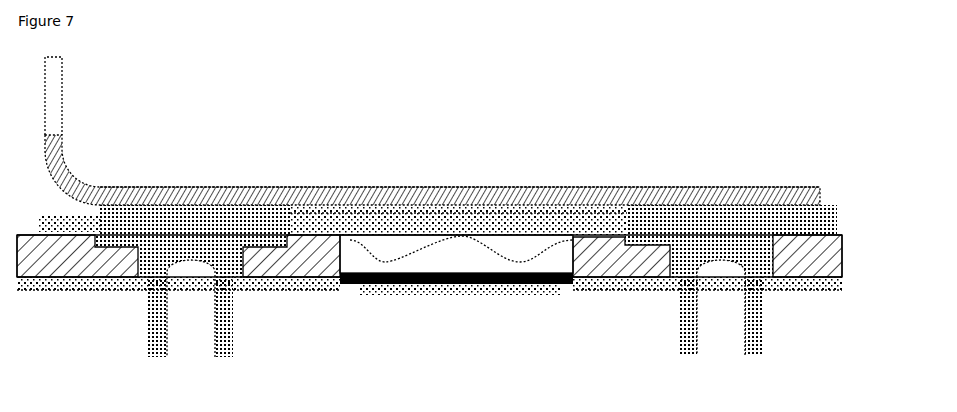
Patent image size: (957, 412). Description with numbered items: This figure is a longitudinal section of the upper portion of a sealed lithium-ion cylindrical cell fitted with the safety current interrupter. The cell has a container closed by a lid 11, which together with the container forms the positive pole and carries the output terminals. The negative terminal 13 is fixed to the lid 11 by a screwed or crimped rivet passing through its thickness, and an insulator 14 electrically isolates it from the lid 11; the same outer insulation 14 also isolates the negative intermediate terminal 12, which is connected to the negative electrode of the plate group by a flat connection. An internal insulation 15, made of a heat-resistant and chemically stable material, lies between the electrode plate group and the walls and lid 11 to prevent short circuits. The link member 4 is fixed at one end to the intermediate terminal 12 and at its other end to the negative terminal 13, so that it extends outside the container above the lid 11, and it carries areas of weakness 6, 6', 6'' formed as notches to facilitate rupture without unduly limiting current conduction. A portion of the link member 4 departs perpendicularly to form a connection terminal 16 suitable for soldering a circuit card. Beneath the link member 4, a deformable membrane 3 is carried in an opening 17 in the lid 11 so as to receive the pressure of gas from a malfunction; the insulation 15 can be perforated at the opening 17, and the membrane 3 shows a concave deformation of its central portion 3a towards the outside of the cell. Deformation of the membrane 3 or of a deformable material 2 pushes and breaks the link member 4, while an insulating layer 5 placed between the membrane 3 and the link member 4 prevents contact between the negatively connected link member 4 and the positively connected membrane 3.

The deformable material 2 is at (442, 285).
The deformable membrane 3 is at (512, 258).
The central portion 3a is at (472, 247).
The link member 4 is at (395, 187).
The insulating layer 5 is at (490, 236).
The area of weakness 6 is at (200, 149).
The area of weakness 6' is at (324, 149).
The area of weakness 6'' is at (590, 158).
The lid 11 is at (797, 263).
The intermediate terminal 12 is at (677, 338).
The negative terminal 13 is at (150, 333).
The insulator 14 is at (55, 217).
The internal insulation 15 is at (88, 288).
The connection terminal 16 is at (58, 122).
The opening 17 is at (352, 252).